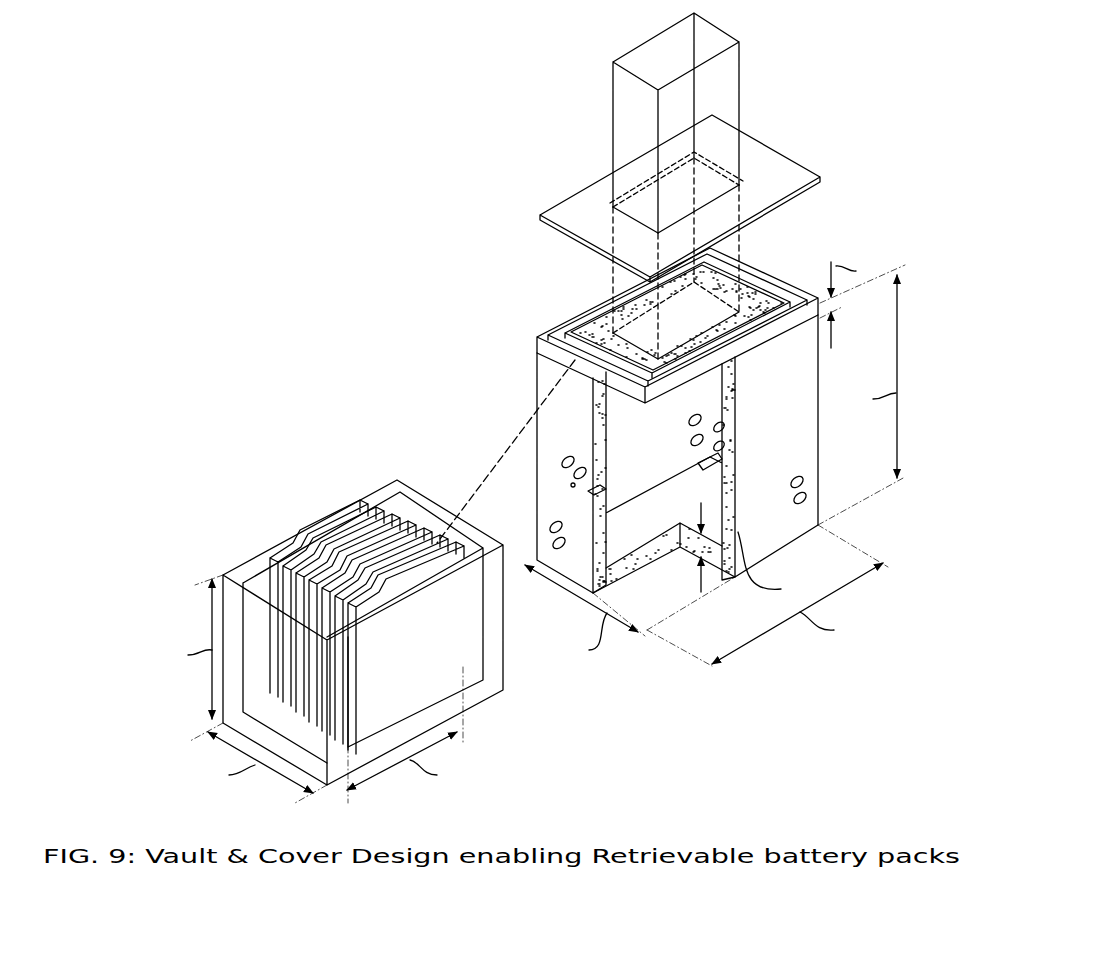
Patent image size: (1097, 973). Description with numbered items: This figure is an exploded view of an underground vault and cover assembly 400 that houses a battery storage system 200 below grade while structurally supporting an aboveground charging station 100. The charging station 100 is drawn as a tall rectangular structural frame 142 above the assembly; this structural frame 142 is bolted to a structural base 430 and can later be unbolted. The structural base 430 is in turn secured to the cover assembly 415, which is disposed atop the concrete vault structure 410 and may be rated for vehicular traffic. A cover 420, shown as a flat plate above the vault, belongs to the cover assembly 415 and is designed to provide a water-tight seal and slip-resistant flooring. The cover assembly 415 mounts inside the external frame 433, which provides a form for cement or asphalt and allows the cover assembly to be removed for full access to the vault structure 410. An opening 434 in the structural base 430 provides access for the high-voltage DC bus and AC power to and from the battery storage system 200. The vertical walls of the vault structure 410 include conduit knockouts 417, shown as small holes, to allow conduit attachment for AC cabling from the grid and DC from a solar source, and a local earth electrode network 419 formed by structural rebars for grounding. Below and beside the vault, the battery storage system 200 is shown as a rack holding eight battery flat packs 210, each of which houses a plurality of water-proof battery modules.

The charging station 100 is at (704, 225).
The structural frame 142 is at (707, 186).
The cover 420 is at (565, 212).
The cover assembly 415 is at (748, 256).
The opening 434 is at (798, 300).
The vault and cover assembly 400 is at (671, 438).
The vault structure 410 is at (536, 372).
The external frame 433 is at (798, 326).
The structural base 430 is at (718, 310).
The local earth electrode network 419 is at (640, 542).
The conduit knockouts 417 is at (805, 506).
The battery storage system 200 is at (332, 641).
The battery flat pack 210 is at (290, 541).